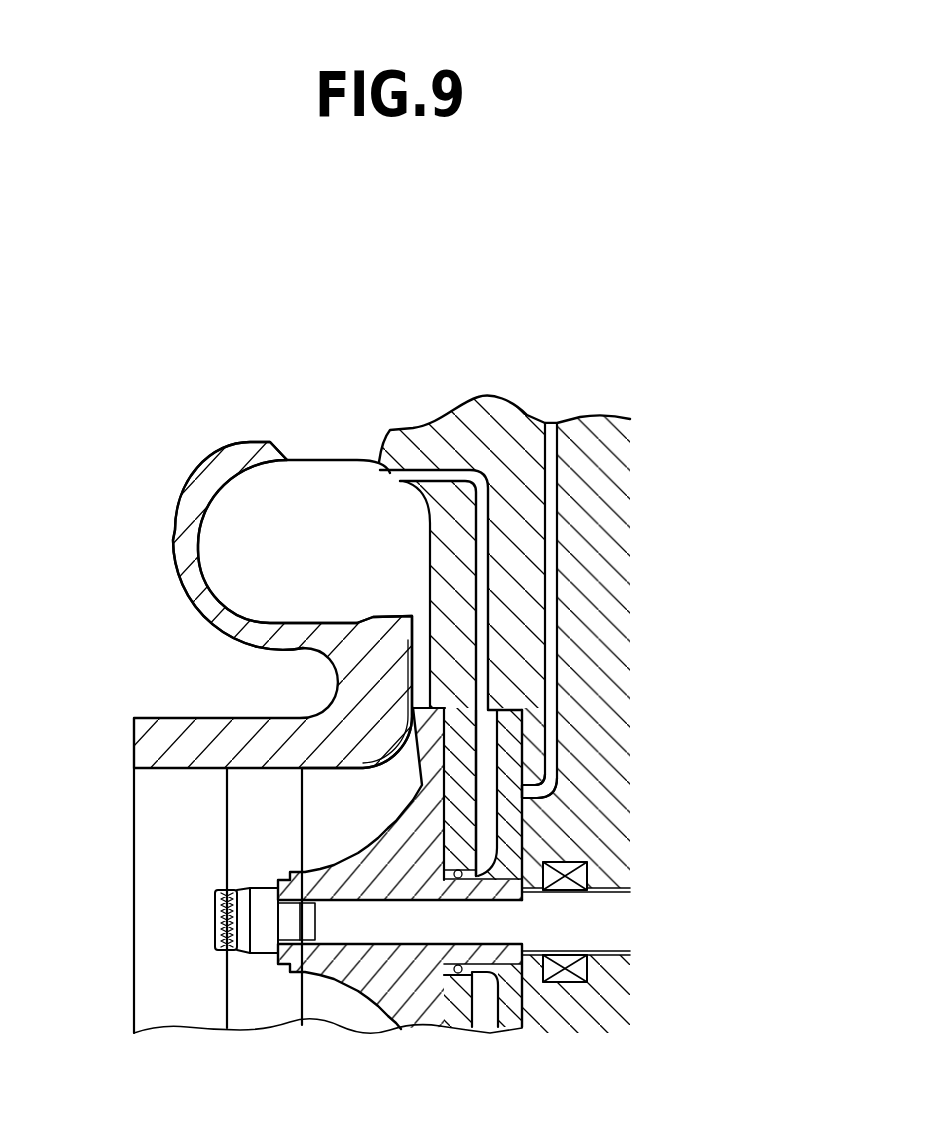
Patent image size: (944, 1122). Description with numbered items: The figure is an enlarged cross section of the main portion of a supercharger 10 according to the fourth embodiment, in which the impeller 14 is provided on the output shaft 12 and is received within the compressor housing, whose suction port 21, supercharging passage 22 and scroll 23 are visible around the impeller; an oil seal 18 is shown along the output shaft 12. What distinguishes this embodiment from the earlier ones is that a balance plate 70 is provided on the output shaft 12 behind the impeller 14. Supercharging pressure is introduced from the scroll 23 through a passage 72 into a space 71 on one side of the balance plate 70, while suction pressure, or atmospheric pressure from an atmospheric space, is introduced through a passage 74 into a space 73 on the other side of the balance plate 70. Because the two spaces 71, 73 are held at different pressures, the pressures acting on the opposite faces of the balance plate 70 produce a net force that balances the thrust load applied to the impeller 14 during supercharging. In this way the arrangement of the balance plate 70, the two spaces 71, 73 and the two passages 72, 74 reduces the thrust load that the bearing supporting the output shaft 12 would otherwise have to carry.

The supercharger 10 is at (670, 311).
The output shaft 12 is at (381, 935).
The impeller 14 is at (376, 950).
The oil seal 18 is at (570, 980).
The suction port 21 is at (172, 768).
The supercharging passage 22 is at (422, 680).
The scroll 23 is at (250, 545).
The balance plate 70 is at (520, 843).
The space 71 is at (486, 738).
The passage 72 is at (460, 474).
The space 73 is at (520, 722).
The passage 74 is at (553, 507).